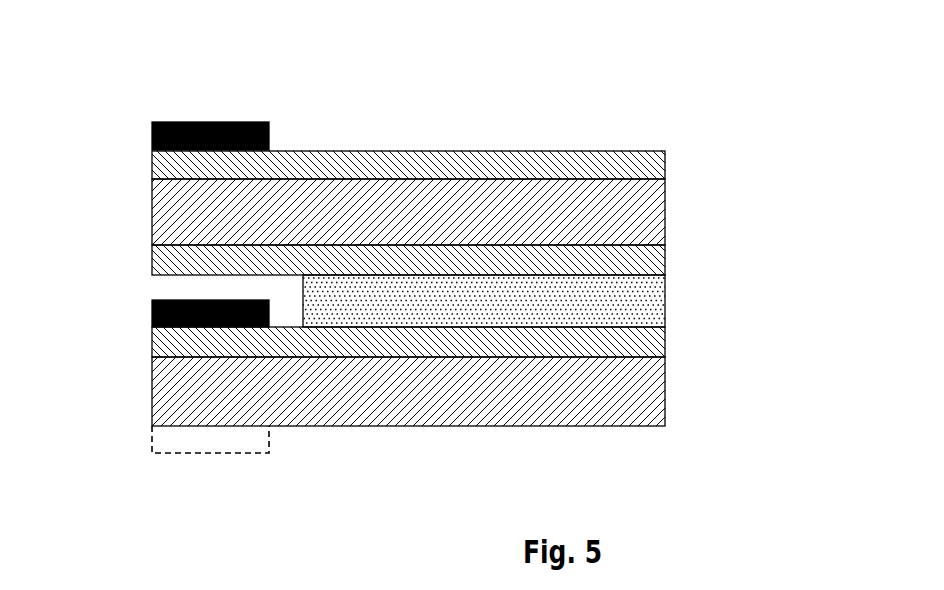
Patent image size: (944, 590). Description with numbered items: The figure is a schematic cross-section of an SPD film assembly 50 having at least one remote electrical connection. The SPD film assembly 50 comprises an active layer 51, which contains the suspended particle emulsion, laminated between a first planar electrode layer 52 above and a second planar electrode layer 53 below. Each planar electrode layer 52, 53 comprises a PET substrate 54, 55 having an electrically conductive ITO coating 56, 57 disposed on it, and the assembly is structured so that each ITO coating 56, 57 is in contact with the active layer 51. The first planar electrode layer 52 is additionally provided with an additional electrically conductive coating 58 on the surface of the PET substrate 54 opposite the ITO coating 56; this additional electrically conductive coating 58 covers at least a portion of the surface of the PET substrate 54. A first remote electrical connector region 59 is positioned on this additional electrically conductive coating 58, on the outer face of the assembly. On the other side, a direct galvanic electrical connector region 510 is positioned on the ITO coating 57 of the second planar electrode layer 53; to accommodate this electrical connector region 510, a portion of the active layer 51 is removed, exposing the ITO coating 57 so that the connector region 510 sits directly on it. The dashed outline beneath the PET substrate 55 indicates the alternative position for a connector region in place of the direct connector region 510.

The SPD film assembly 50 is at (497, 100).
The active layer 51 is at (653, 295).
The first planar electrode layer 52 is at (123, 182).
The second planar electrode layer 53 is at (123, 333).
The PET substrate 54 is at (638, 207).
The PET substrate 55 is at (652, 400).
The ITO coating 56 is at (653, 258).
The ITO coating 57 is at (652, 344).
The additional electrically conductive coating 58 is at (630, 158).
The first remote electrical connector region 59 is at (262, 122).
The direct galvanic electrical connector region 510 is at (152, 309).